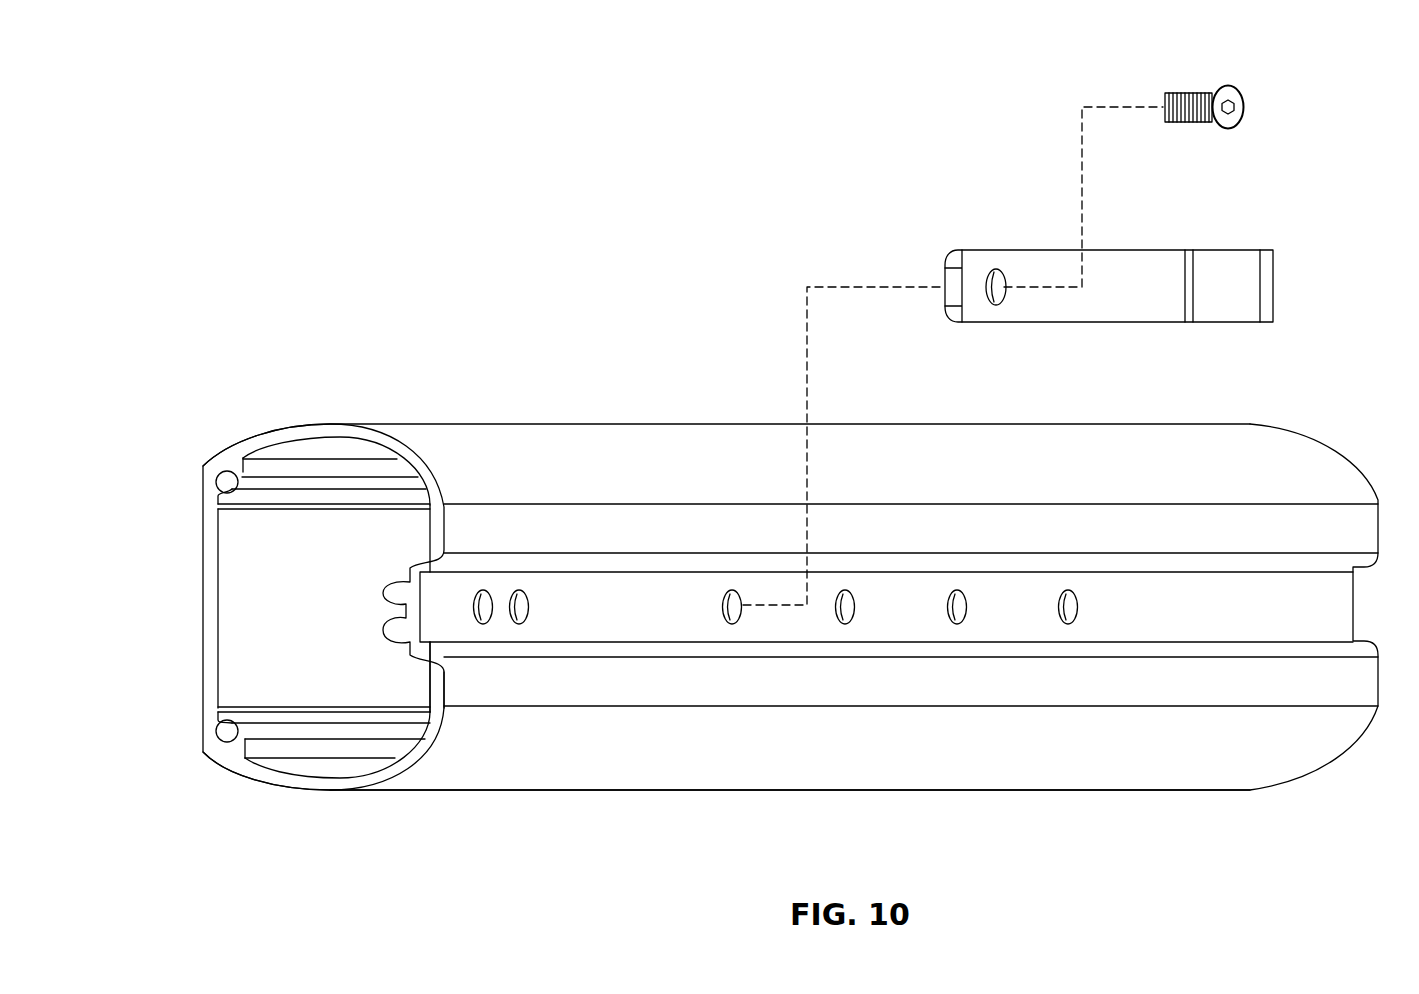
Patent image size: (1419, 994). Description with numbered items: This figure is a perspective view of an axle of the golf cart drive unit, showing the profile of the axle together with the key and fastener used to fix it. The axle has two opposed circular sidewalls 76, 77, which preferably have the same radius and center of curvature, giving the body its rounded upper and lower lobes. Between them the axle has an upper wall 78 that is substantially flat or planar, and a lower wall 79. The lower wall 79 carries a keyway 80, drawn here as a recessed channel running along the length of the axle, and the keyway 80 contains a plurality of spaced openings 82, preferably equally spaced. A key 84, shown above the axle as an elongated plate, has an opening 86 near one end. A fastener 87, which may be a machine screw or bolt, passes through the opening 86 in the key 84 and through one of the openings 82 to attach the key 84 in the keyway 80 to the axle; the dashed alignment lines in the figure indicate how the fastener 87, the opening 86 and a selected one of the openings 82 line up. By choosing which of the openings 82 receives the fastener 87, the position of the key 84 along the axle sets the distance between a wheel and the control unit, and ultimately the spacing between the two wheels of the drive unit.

The circular sidewall 76 is at (345, 432).
The circular sidewall 77 is at (330, 793).
The upper wall 78 is at (205, 612).
The lower wall 79 is at (438, 686).
The keyway 80 is at (623, 583).
The spaced openings 82 is at (726, 610).
The key 84 is at (978, 256).
The opening 86 is at (1000, 305).
The fastener 87 is at (1228, 95).